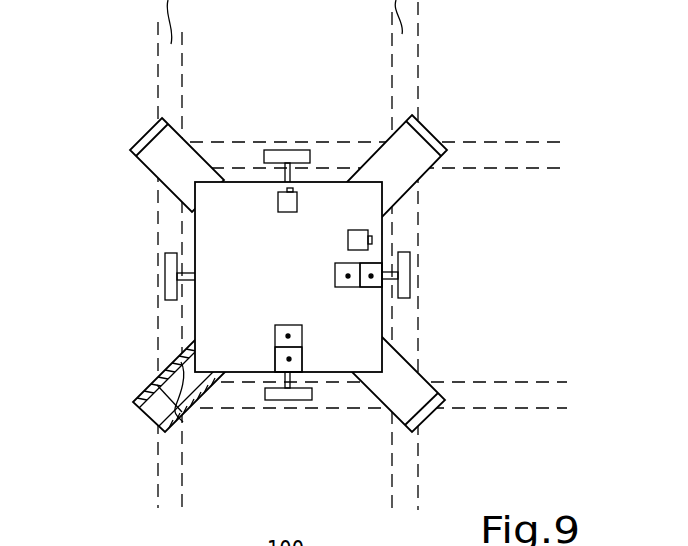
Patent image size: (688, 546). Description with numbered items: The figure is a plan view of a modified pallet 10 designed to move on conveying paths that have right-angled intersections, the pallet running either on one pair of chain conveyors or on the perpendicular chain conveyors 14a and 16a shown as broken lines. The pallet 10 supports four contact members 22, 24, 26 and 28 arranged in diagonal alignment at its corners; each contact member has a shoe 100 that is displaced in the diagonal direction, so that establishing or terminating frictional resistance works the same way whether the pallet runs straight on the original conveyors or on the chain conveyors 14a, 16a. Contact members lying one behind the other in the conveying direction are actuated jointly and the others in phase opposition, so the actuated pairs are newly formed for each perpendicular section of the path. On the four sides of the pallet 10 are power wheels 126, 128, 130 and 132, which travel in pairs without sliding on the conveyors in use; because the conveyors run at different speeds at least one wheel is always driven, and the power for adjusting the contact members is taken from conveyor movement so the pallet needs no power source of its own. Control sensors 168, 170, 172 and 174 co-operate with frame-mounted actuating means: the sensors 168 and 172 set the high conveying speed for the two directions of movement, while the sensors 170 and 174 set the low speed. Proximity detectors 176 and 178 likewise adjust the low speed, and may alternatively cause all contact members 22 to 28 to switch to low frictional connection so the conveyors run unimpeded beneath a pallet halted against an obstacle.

The pallet 10 is at (210, 229).
The chain conveyor 14a is at (546, 390).
The chain conveyor 16a is at (551, 158).
The contact member 22 is at (412, 168).
The contact member 24 is at (407, 393).
The contact member 26 is at (138, 150).
The contact member 28 is at (152, 380).
The shoe 100 is at (153, 410).
The power wheel 126 is at (412, 278).
The power wheel 128 is at (288, 400).
The power wheel 130 is at (165, 277).
The power wheel 132 is at (288, 150).
The control sensor 168 is at (364, 288).
The control sensor 170 is at (335, 278).
The control sensor 172 is at (302, 362).
The control sensor 174 is at (275, 335).
The proximity detector 176 is at (297, 200).
The proximity detector 178 is at (348, 240).